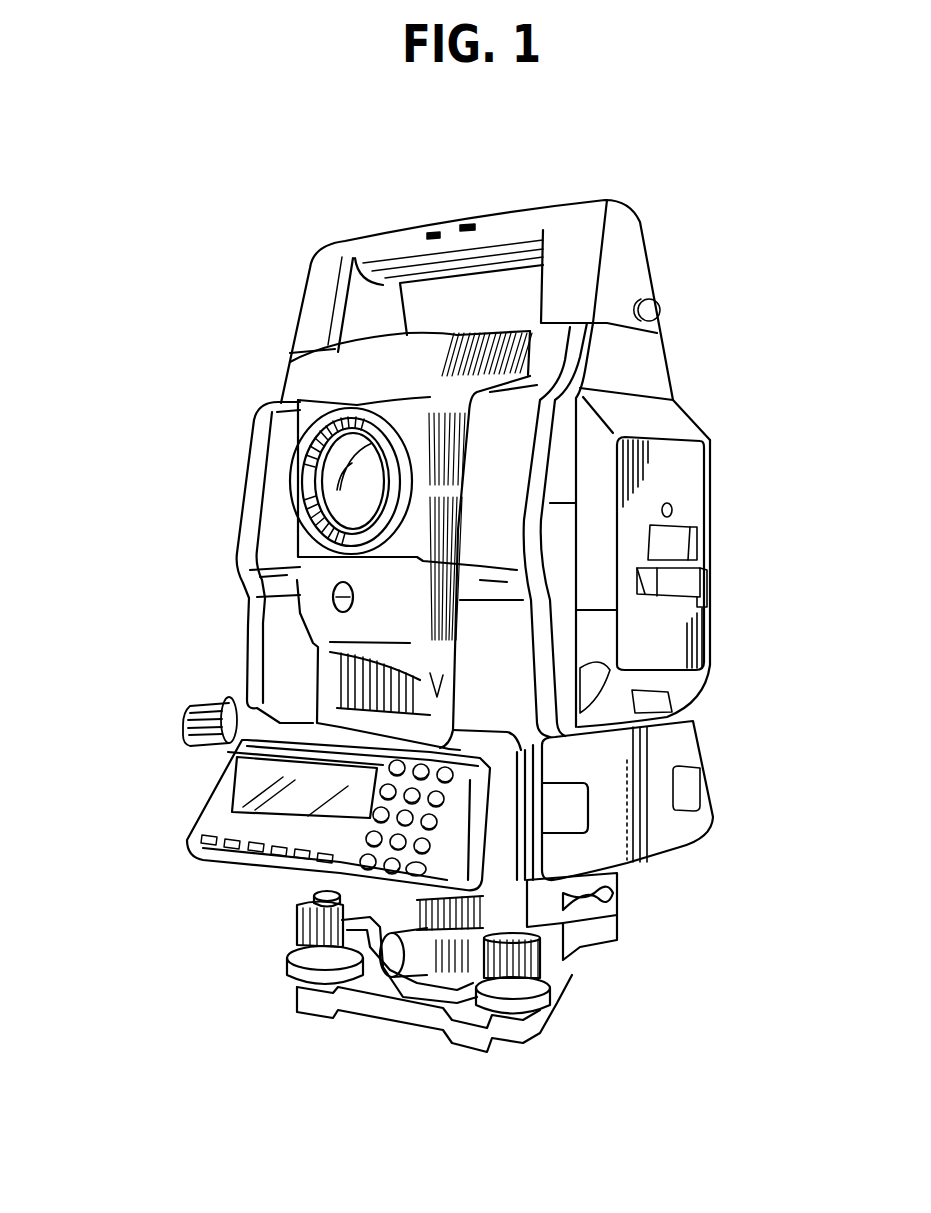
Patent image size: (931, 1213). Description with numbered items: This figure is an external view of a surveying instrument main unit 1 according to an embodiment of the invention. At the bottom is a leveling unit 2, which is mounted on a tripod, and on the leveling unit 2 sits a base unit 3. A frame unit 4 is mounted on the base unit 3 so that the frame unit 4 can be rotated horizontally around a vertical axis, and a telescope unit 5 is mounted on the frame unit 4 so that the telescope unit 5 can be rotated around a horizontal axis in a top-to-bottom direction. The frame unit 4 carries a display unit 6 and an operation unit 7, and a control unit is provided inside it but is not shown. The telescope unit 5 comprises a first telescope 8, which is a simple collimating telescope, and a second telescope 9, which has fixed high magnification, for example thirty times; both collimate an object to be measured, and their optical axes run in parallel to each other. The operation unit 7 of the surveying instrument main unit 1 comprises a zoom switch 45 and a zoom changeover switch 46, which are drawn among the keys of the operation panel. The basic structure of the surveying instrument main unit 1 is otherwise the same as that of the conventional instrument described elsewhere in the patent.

The surveying instrument main unit 1 is at (104, 250).
The leveling unit 2 is at (293, 1012).
The base unit 3 is at (617, 927).
The frame unit 4 is at (707, 435).
The telescope unit 5 is at (350, 377).
The display unit 6 is at (280, 781).
The operation unit 7 is at (277, 860).
The first telescope 8 is at (333, 601).
The second telescope 9 is at (340, 475).
The zoom switch 45 is at (450, 772).
The zoom changeover switch 46 is at (453, 793).